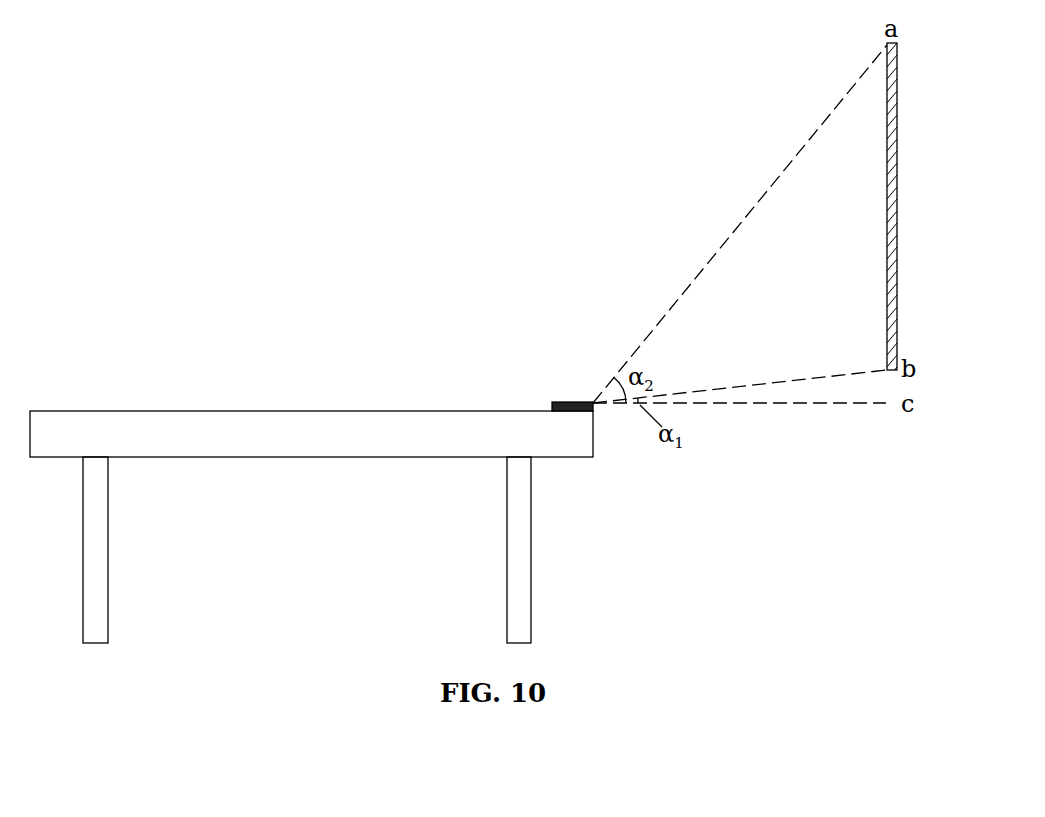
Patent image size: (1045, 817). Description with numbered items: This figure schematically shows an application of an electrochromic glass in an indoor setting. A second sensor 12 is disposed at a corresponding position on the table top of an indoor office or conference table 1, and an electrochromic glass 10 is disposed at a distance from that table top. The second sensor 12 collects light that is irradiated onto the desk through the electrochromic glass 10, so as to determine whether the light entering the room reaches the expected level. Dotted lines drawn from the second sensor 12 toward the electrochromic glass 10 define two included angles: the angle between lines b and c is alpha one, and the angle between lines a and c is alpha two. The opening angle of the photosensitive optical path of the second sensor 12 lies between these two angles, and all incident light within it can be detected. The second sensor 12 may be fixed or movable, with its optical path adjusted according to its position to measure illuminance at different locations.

The office or conference table 1 is at (250, 435).
The second sensor 12 is at (568, 402).
The electrochromic glass 10 is at (897, 220).